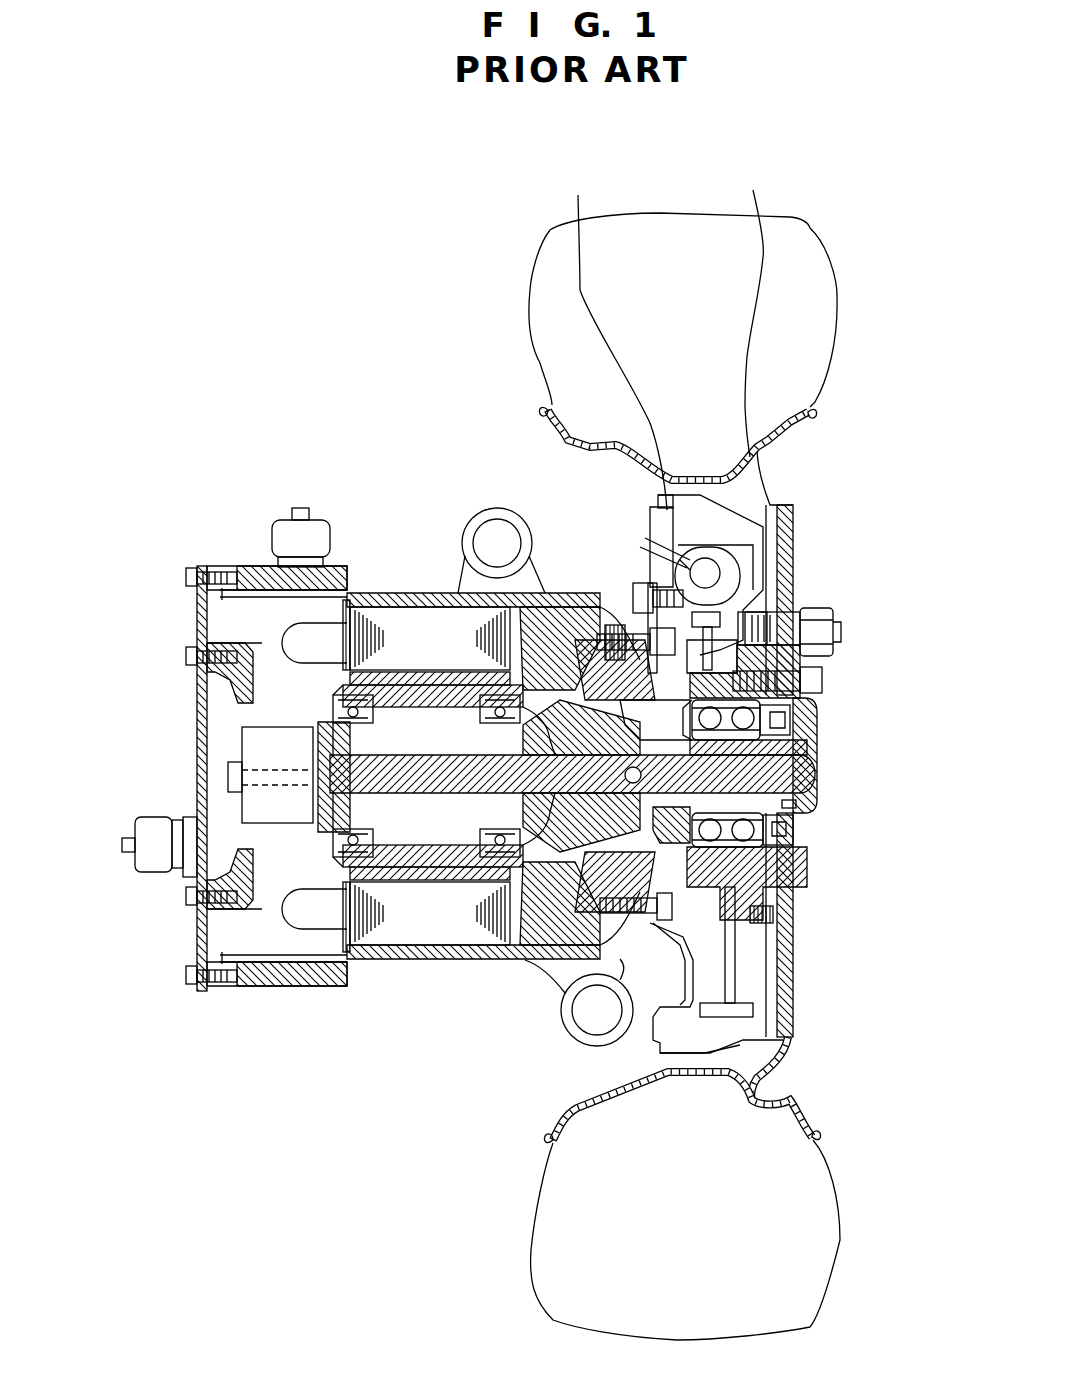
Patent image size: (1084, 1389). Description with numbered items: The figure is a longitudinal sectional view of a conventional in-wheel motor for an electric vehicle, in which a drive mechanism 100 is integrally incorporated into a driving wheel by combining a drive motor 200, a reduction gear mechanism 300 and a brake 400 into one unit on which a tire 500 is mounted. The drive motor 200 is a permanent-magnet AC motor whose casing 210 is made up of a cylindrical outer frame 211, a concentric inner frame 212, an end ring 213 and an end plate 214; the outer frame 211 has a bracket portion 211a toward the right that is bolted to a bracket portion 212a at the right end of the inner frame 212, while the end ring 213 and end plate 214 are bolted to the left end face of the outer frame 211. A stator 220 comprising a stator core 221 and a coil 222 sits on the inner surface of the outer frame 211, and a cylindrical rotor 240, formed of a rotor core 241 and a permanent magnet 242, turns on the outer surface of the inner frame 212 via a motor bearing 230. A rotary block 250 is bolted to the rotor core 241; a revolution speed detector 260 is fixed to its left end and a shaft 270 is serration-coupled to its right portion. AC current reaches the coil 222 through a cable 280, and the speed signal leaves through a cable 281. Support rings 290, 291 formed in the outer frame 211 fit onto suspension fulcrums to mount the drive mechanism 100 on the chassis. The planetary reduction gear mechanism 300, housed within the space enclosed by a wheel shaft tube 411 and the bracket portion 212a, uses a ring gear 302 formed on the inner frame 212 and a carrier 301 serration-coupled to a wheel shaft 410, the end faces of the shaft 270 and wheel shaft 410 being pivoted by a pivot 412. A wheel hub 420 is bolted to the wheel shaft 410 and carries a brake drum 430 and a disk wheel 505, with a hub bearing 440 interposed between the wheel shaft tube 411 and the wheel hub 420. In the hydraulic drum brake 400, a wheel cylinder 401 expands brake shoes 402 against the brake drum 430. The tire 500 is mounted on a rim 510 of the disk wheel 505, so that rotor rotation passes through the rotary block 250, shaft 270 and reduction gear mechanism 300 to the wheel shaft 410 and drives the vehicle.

The drive mechanism 100 is at (296, 330).
The drive motor 200 is at (427, 995).
The casing 210 is at (424, 667).
The outer frame 211 is at (458, 640).
The bracket portion 211a is at (612, 640).
The inner frame 212 is at (445, 795).
The bracket portion 212a is at (800, 695).
The end ring 213 is at (200, 592).
The end plate 214 is at (199, 683).
The stator 220 is at (355, 625).
The stator core 221 is at (403, 640).
The coil 222 is at (338, 633).
The motor bearing 230 is at (350, 842).
The rotor 240 is at (283, 585).
The rotor core 241 is at (345, 710).
The permanent magnet 242 is at (345, 690).
The rotary block 250 is at (325, 745).
The revolution speed detector 260 is at (258, 812).
The shaft 270 is at (345, 880).
The cable 280 is at (294, 508).
The cable 281 is at (130, 852).
The support ring 290 is at (487, 508).
The support ring 291 is at (578, 1040).
The reduction gear mechanism 300 is at (583, 655).
The carrier 301 is at (817, 772).
The ring gear 302 is at (633, 637).
The brake 400 is at (808, 568).
The wheel cylinder 401 is at (583, 215).
The brake shoes 402 is at (793, 1023).
The wheel shaft 410 is at (807, 742).
The wheel shaft tube 411 is at (800, 806).
The pivot 412 is at (780, 855).
The wheel hub 420 is at (820, 640).
The brake drum 430 is at (802, 490).
The hub bearing 440 is at (800, 838).
The tire 500 is at (650, 240).
The disk wheel 505 is at (754, 216).
The rim 510 is at (822, 410).